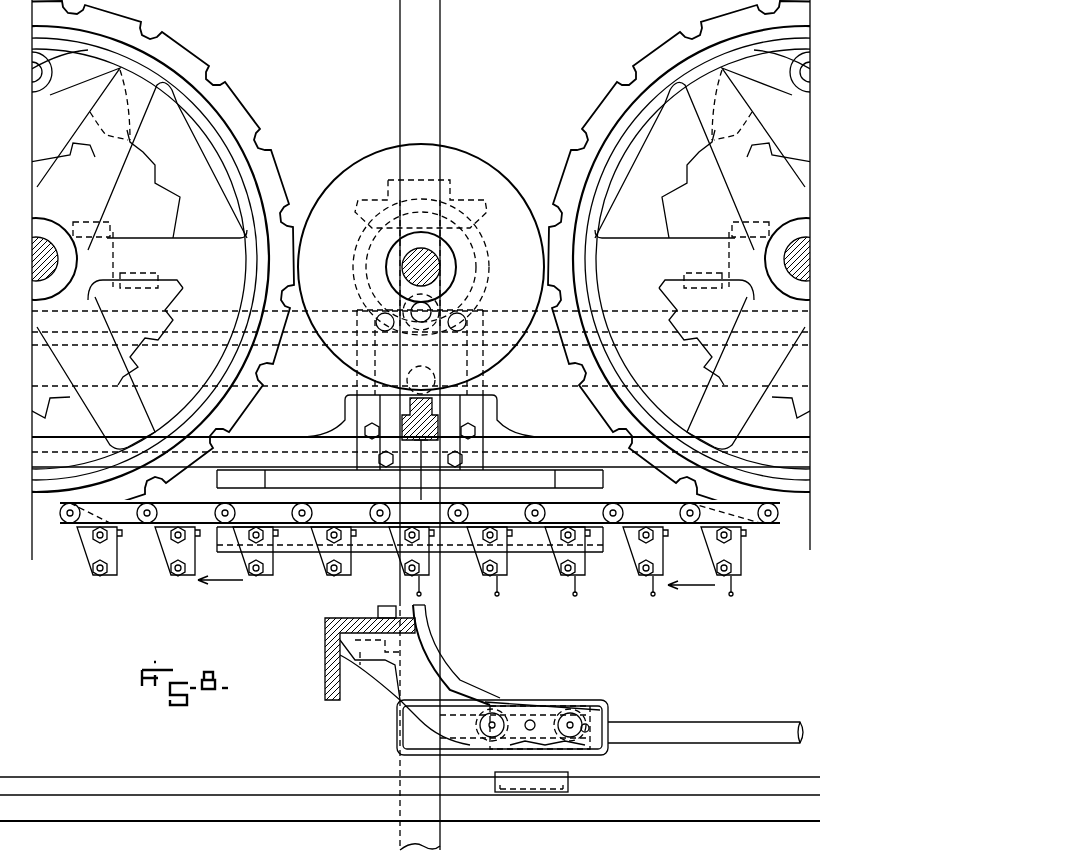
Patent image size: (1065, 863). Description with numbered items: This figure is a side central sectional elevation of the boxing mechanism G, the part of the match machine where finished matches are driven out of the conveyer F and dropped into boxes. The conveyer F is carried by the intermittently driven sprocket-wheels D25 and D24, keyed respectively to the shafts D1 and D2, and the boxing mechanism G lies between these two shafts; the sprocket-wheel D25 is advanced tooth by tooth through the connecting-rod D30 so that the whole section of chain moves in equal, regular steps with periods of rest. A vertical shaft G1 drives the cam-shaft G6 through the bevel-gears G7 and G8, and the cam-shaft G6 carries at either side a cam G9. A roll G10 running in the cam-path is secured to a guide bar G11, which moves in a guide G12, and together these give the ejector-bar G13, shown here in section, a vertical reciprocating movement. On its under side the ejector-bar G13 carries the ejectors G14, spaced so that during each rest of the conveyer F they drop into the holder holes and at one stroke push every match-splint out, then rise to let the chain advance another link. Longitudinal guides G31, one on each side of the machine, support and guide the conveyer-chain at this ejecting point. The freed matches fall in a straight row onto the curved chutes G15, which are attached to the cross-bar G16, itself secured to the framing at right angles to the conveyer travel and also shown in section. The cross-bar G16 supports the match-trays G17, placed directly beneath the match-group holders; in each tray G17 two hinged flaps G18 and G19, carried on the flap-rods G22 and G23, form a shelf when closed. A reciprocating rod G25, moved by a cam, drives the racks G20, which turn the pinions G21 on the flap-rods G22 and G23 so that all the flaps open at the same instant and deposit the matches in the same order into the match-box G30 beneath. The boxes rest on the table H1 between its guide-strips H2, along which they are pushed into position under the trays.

The sprocket-wheel D24 is at (205, 70).
The sprocket-wheel D25 is at (695, 36).
The shaft D2 is at (95, 230).
The shaft D1 is at (745, 235).
The connecting-rod D30 is at (540, 428).
The vertical shaft G1 is at (440, 50).
The cam G9 is at (458, 145).
The bevel-gear G8 is at (360, 245).
The bevel-gear G7 is at (375, 200).
The cam-shaft G6 is at (437, 257).
The roll G10 is at (360, 312).
The guide bar G11 is at (440, 470).
The guide G12 is at (483, 455).
The ejector-bar G13 is at (340, 455).
The ejector G14 is at (395, 460).
The longitudinal guide G31 is at (470, 552).
The conveyer F is at (162, 525).
The cross-bar G16 is at (325, 625).
The curved chute G15 is at (432, 660).
The boxing mechanism G is at (591, 627).
The hinged flap G18 is at (512, 708).
The match-tray G17 is at (522, 710).
The hinged flap G19 is at (565, 712).
The rack G20 is at (628, 755).
The pinion G21 is at (592, 708).
The flap-rod G22 is at (470, 734).
The flap-rod G23 is at (610, 718).
The reciprocating rod G25 is at (705, 717).
The match-box G30 is at (560, 792).
The guide-strip H2 is at (735, 777).
The table H1 is at (686, 821).